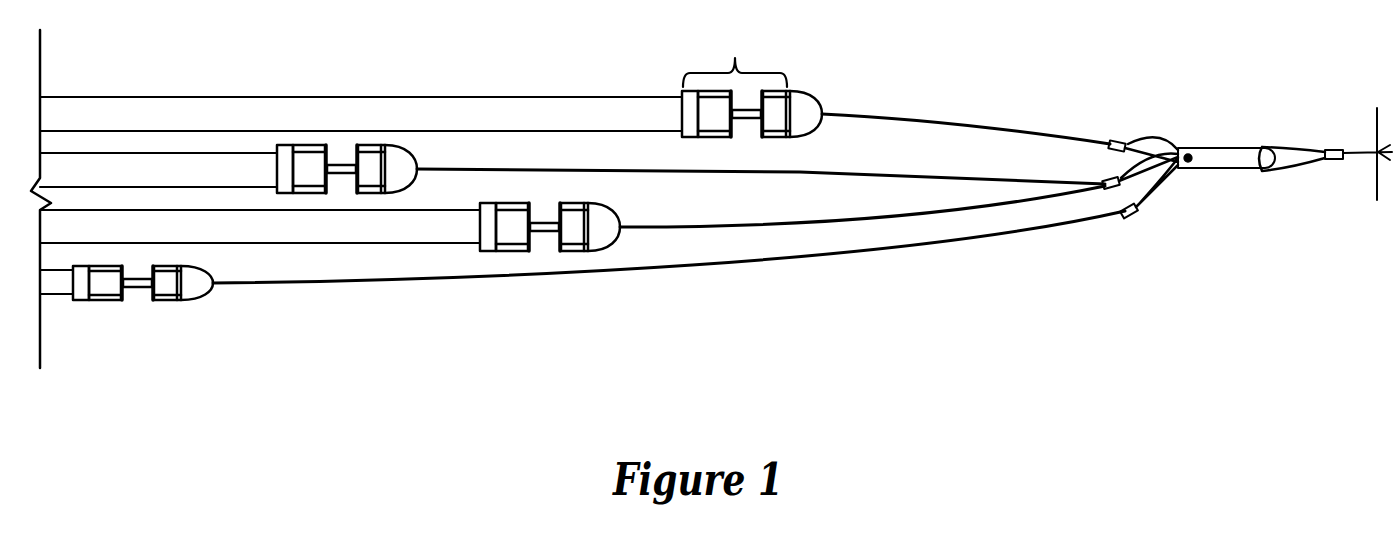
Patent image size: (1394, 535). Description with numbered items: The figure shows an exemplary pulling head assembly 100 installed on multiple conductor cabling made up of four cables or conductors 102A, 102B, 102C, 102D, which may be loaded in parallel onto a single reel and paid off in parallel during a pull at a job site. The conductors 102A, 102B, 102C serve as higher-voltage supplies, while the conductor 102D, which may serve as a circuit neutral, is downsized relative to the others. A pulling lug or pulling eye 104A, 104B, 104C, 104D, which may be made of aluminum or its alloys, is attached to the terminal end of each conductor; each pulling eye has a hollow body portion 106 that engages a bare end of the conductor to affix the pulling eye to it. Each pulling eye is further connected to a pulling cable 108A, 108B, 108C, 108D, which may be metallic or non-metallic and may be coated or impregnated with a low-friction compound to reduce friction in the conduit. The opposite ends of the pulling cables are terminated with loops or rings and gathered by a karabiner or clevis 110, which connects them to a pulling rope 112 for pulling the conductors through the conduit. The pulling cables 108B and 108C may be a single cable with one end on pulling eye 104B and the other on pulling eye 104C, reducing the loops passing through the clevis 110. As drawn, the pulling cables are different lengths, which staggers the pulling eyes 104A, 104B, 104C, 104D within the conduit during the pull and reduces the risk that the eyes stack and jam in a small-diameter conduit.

The pulling head assembly 100 is at (1073, 360).
The conductor 102A is at (443, 117).
The conductor 102B is at (227, 172).
The conductor 102C is at (322, 222).
The conductor 102D is at (55, 288).
The pulling eye 104A is at (805, 120).
The pulling eye 104B is at (400, 170).
The pulling eye 104C is at (605, 222).
The pulling eye 104D is at (200, 288).
The hollow body portion 106 is at (735, 61).
The pulling cable 108A is at (975, 118).
The pulling cable 108B is at (902, 153).
The pulling cable 108C is at (790, 207).
The pulling cable 108D is at (777, 268).
The clevis 110 is at (1228, 157).
The pulling rope 112 is at (1280, 176).